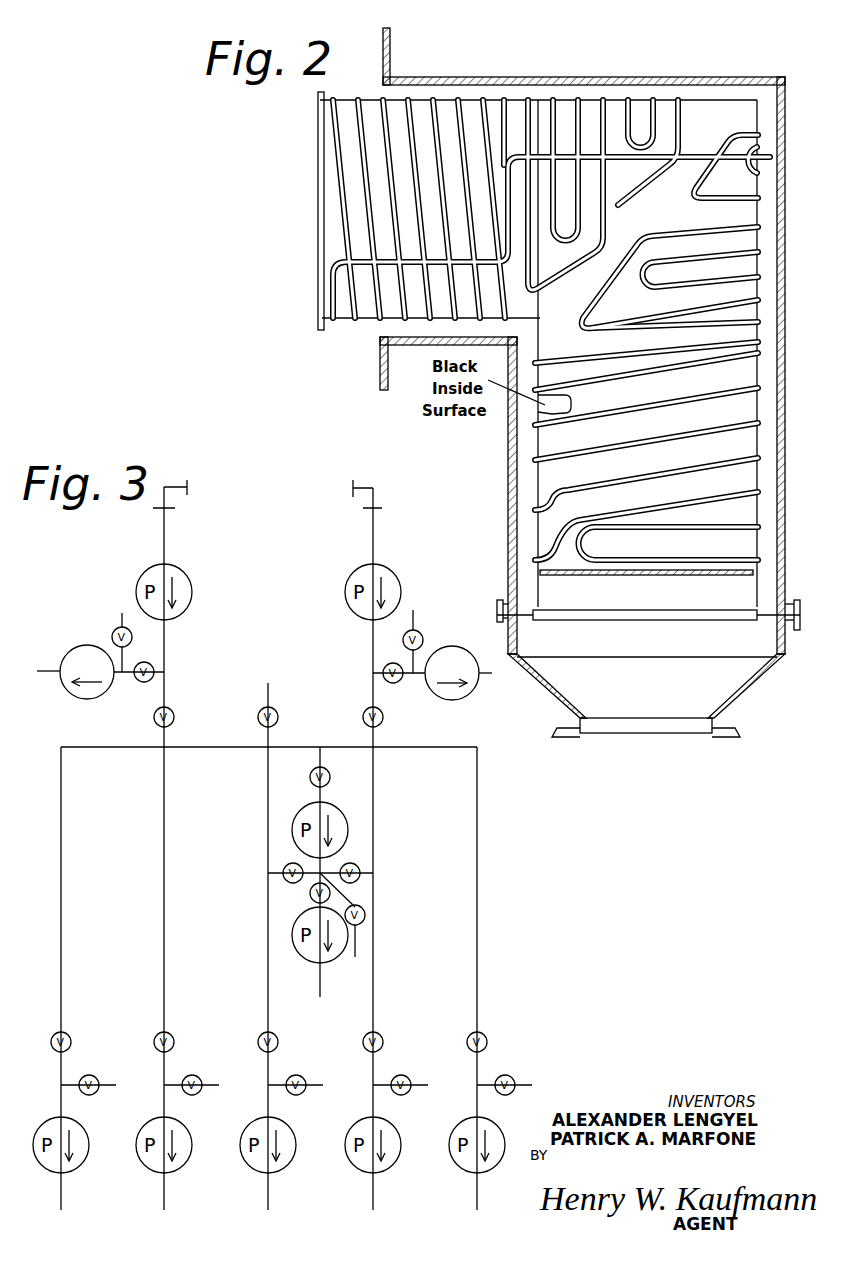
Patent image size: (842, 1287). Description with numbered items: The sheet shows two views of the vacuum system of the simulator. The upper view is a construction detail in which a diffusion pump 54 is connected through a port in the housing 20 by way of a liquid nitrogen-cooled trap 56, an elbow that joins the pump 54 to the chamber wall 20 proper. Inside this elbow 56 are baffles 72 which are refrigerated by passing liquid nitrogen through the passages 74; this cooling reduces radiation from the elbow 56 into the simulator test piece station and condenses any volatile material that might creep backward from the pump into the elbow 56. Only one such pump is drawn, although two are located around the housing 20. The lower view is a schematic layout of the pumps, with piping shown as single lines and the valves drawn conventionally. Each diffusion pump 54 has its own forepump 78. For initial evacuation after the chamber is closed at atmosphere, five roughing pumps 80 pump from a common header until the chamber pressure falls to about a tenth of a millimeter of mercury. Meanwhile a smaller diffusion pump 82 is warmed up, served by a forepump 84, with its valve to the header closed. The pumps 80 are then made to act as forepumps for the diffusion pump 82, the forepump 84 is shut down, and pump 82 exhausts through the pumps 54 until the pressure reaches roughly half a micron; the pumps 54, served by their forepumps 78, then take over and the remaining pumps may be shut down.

In FIG. 2, the housing 20 is at (391, 42).
In FIG. 2, the liquid nitrogen-cooled trap 56 is at (775, 75).
In FIG. 3, the liquid nitrogen-cooled trap 56 is at (181, 484).
In FIG. 2, the passages 74 is at (675, 283).
In FIG. 2, the baffles 72 is at (553, 440).
In FIG. 3, the diffusion pump 54 is at (192, 601).
In FIG. 3, the forepump 78 is at (73, 648).
In FIG. 3, the diffusion pump 82 is at (292, 829).
In FIG. 3, the forepump 84 is at (333, 961).
In FIG. 3, the roughing pumps 80 is at (143, 1170).